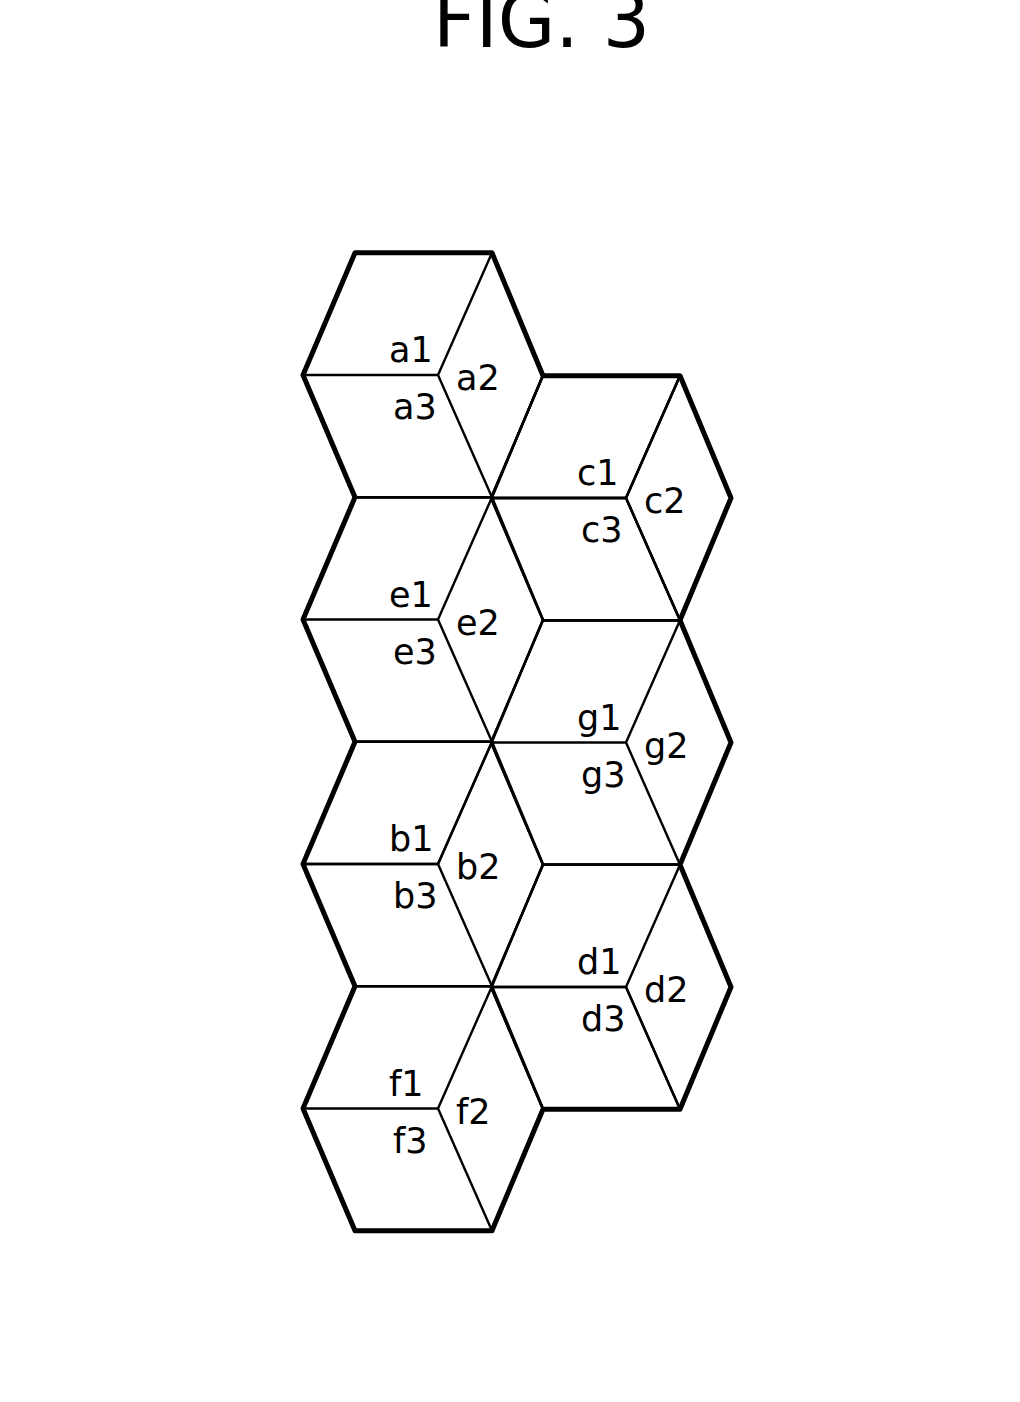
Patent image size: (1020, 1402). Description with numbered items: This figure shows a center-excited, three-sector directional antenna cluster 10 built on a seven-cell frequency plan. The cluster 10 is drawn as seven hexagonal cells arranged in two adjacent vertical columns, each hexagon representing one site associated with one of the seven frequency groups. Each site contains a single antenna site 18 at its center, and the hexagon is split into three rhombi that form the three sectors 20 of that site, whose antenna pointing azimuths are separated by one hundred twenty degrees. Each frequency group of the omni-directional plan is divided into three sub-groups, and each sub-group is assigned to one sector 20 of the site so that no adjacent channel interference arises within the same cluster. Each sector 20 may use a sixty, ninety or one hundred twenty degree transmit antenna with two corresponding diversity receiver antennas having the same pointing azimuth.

The cell cluster 10 is at (164, 470).
The antenna site 18 is at (443, 353).
The sector 20 is at (560, 400).